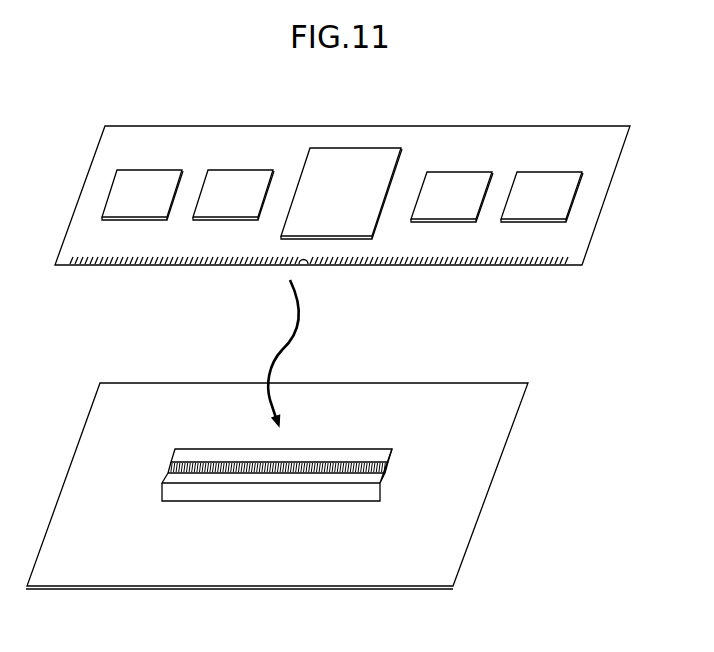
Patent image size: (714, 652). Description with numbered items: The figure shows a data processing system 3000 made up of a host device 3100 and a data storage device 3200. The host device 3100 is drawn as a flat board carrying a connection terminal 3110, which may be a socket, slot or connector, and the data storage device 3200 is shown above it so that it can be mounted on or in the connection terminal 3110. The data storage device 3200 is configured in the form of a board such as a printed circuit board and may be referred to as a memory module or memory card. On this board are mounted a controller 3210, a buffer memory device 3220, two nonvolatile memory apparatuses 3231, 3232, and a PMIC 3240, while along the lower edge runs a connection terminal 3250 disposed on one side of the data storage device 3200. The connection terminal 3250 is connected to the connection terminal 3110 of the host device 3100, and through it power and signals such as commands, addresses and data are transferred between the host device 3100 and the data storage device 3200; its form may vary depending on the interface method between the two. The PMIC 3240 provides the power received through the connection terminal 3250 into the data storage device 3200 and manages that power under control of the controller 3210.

The data processing system 3000 is at (200, 94).
The host device 3100 is at (93, 581).
The connection terminal 3110 is at (411, 445).
The data storage device 3200 is at (159, 157).
The controller 3210 is at (361, 206).
The buffer memory device 3220 is at (213, 221).
The nonvolatile memory apparatus 3231 is at (432, 222).
The nonvolatile memory apparatus 3232 is at (522, 222).
The PMIC 3240 is at (132, 221).
The connection terminal 3250 is at (90, 266).